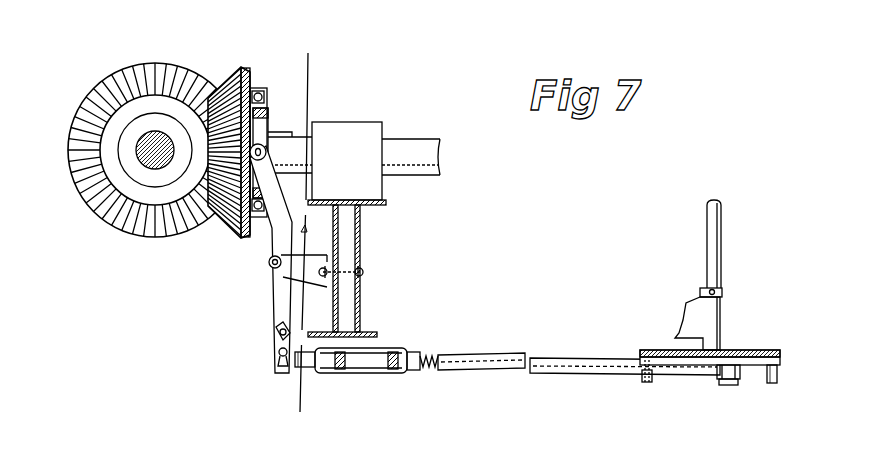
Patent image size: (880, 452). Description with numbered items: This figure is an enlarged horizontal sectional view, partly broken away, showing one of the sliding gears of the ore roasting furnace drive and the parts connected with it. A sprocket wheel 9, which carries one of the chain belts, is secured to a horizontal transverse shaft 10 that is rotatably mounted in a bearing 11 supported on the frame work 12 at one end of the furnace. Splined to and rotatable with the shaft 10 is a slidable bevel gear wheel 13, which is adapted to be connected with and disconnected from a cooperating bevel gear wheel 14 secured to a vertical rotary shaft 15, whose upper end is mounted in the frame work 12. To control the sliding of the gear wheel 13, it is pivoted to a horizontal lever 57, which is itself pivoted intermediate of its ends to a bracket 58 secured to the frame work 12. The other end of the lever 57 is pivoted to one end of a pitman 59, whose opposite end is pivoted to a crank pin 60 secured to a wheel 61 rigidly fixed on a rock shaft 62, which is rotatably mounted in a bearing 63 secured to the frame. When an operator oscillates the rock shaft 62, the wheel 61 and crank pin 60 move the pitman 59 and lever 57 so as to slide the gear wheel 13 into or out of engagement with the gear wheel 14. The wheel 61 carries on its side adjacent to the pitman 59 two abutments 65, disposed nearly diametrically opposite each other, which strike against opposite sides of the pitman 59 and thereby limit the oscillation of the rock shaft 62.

The sprocket wheel 9 is at (301, 230).
The horizontal transverse shaft 10 is at (420, 145).
The bearing 11 is at (362, 135).
The frame work 12 is at (358, 230).
The bevel gear wheel 13 is at (244, 70).
The bevel gear wheel 14 is at (175, 75).
The vertical rotary shaft 15 is at (145, 143).
The horizontal lever 57 is at (277, 298).
The bracket 58 is at (292, 268).
The pitman 59 is at (488, 360).
The crank pin 60 is at (727, 380).
The wheel 61 is at (760, 356).
The rock shaft 62 is at (717, 255).
The bearing 63 is at (710, 312).
The abutment 65 is at (647, 383).